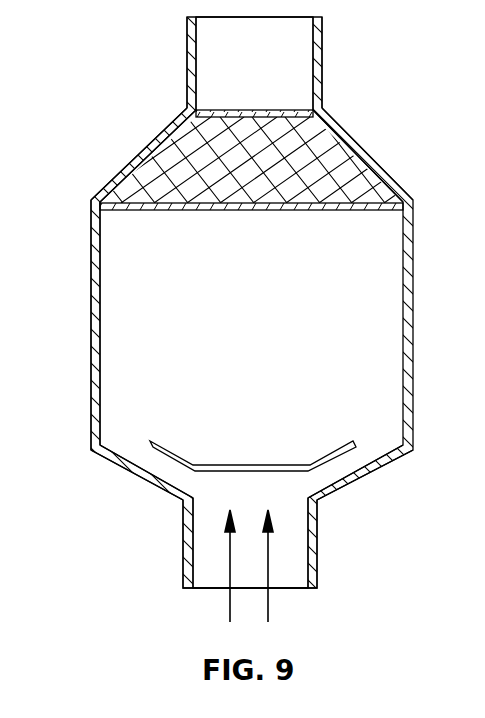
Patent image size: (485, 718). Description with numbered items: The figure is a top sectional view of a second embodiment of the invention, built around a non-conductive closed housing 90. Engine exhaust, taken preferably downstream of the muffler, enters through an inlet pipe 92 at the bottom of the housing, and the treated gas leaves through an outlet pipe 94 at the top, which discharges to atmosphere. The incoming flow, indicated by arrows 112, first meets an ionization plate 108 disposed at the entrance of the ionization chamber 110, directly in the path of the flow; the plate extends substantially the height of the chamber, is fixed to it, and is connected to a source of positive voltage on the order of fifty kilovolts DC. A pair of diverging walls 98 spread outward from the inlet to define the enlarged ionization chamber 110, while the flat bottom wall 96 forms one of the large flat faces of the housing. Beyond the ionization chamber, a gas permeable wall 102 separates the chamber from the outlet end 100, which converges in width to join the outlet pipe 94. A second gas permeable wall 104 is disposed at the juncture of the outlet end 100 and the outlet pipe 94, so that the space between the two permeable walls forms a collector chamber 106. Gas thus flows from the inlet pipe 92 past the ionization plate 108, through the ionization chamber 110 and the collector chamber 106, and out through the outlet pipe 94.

The non-conductive closed housing 90 is at (413, 356).
The inlet pipe 92 is at (318, 555).
The outlet pipe 94 is at (322, 46).
The bottom wall 96 is at (264, 343).
The diverging walls 98 is at (133, 473).
The outlet end 100 is at (142, 153).
The gas permeable wall 102 is at (243, 211).
The second gas permeable wall 104 is at (247, 109).
The collector chamber 106 is at (347, 163).
The ionization plate 108 is at (255, 465).
The ionization chamber 110 is at (110, 360).
The arrows 112 is at (230, 595).